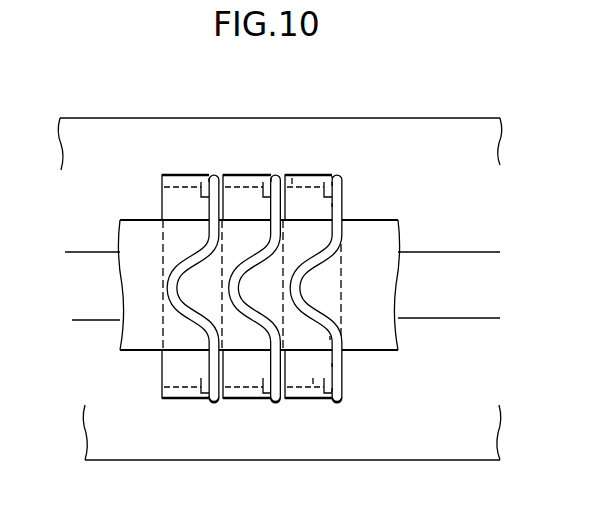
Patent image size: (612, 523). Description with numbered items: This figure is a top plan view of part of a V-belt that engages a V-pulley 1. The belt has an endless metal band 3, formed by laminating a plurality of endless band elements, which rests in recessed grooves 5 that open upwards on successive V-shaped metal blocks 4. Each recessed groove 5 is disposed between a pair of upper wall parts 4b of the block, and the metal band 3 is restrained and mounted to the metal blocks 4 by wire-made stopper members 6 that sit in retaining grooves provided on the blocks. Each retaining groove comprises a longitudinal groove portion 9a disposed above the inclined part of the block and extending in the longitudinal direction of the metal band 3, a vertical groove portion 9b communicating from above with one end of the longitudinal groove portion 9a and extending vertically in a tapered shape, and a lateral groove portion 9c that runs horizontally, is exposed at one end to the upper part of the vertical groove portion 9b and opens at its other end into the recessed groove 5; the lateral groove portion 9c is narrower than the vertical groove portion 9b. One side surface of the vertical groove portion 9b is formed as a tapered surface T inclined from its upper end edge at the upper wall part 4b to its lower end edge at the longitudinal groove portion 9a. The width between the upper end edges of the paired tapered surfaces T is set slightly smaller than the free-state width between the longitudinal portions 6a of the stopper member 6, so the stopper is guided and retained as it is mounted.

The V-pulley 1 is at (103, 131).
The metal band 3 is at (143, 340).
The V-shaped metal block 4 is at (190, 183).
The upper wall part 4b is at (315, 192).
The recessed groove 5 is at (327, 338).
The stopper member 6 is at (170, 268).
The longitudinal portion of stopper member 6a is at (329, 178).
The longitudinal groove portion 9a is at (293, 183).
The vertical groove portion 9b is at (336, 181).
The lateral groove portion 9c is at (334, 205).
The tapered surface T is at (206, 183).